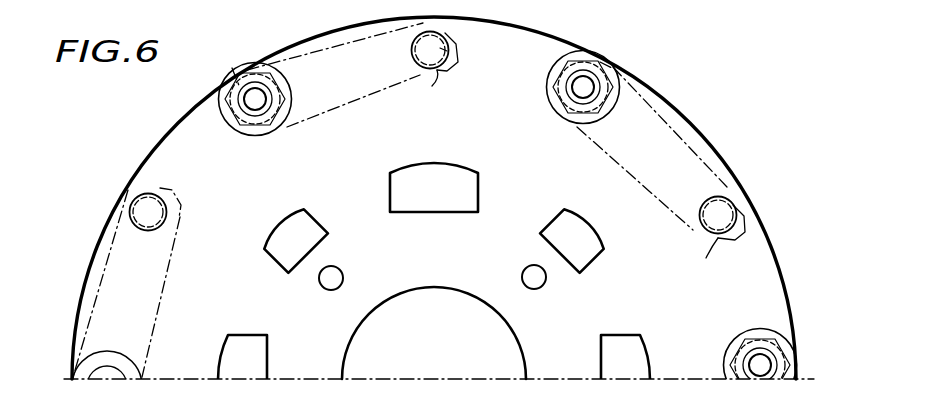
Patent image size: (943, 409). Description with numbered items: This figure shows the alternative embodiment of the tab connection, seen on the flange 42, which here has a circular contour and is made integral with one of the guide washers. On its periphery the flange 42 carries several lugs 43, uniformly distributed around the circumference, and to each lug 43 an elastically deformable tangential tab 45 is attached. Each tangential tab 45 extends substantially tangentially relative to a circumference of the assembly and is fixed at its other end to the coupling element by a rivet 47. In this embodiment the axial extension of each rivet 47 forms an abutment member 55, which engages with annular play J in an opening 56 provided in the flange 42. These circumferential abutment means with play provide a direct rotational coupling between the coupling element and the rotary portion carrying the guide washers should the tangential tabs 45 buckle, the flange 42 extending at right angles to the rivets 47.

The flange 42 is at (747, 190).
The lug 43 is at (193, 147).
The tangential tab 45 is at (343, 113).
The rivet 47 is at (450, 66).
The abutment member 55 is at (429, 70).
The opening 56 is at (447, 50).
The annular play J is at (431, 36).